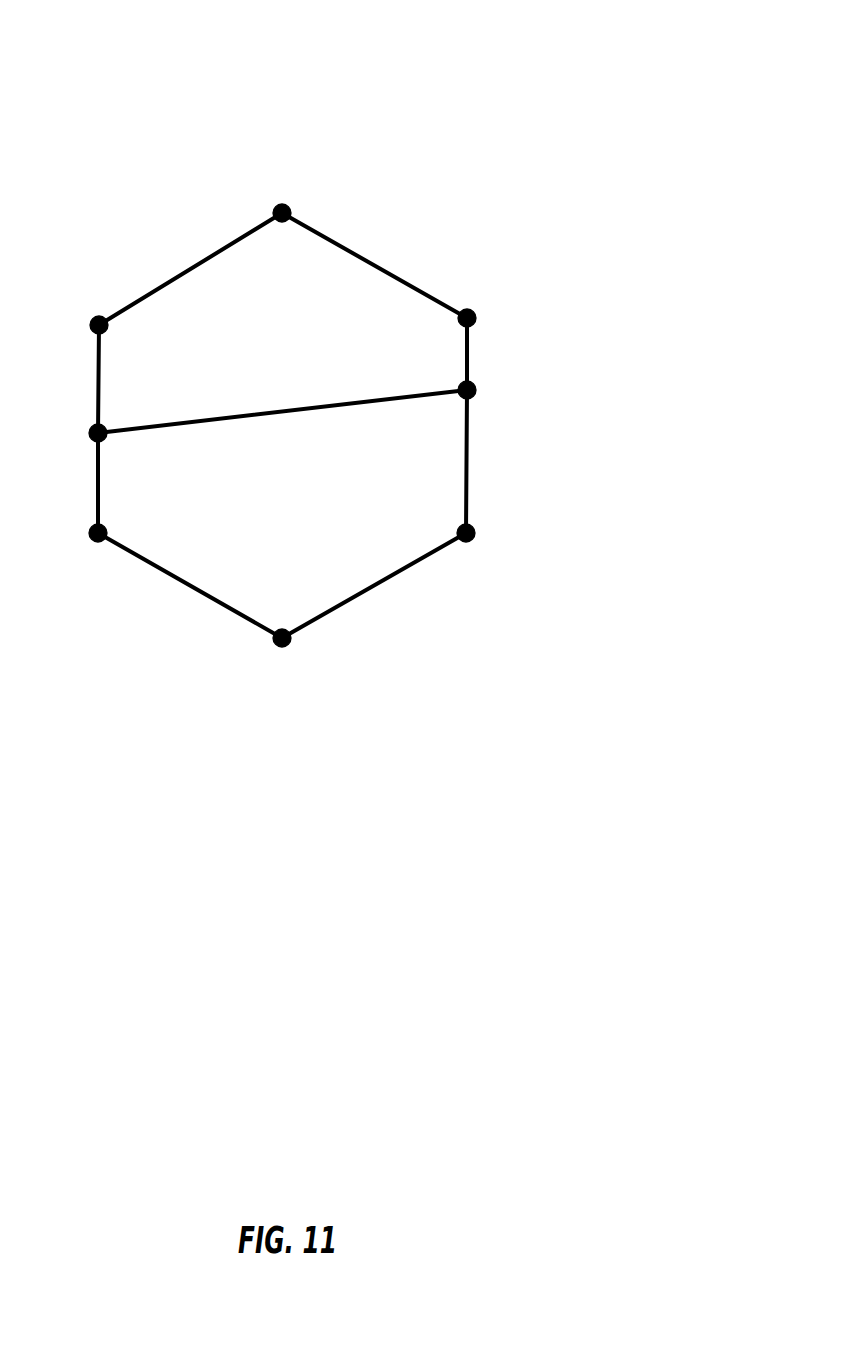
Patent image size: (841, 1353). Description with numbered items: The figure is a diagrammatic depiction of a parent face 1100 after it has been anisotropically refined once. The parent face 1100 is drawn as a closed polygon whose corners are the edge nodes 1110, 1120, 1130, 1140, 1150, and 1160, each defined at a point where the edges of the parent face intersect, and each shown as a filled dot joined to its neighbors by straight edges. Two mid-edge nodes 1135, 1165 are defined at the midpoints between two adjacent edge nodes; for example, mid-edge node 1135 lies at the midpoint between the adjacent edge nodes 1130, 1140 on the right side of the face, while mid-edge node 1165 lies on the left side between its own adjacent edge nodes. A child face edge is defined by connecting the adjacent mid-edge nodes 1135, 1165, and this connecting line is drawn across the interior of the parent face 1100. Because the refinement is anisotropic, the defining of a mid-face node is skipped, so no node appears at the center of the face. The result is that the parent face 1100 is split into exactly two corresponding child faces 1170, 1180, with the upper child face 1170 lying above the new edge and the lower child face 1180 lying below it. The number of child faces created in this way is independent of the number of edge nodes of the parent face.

The parent face 1100 is at (458, 78).
The edge node 1110 is at (100, 544).
The edge node 1120 is at (281, 648).
The edge node 1130 is at (463, 542).
The mid-edge node 1135 is at (472, 384).
The edge node 1140 is at (469, 310).
The edge node 1150 is at (286, 210).
The edge node 1160 is at (100, 318).
The mid-edge node 1165 is at (94, 426).
The child face 1170 is at (308, 339).
The child face 1180 is at (308, 532).